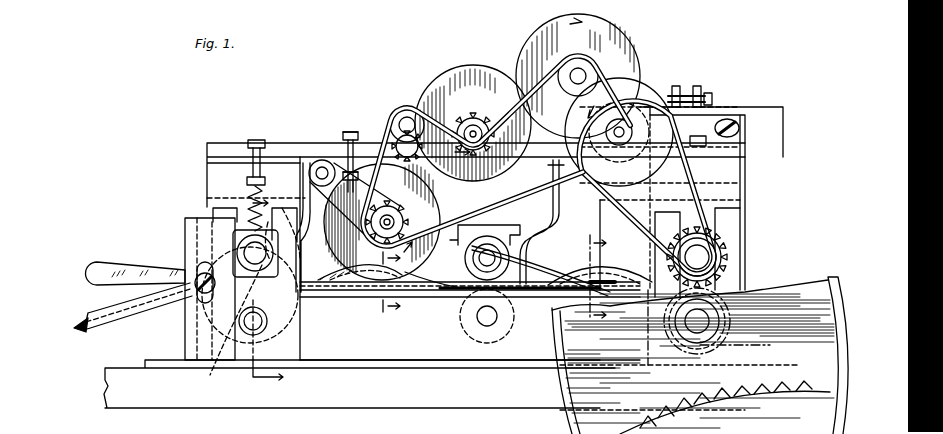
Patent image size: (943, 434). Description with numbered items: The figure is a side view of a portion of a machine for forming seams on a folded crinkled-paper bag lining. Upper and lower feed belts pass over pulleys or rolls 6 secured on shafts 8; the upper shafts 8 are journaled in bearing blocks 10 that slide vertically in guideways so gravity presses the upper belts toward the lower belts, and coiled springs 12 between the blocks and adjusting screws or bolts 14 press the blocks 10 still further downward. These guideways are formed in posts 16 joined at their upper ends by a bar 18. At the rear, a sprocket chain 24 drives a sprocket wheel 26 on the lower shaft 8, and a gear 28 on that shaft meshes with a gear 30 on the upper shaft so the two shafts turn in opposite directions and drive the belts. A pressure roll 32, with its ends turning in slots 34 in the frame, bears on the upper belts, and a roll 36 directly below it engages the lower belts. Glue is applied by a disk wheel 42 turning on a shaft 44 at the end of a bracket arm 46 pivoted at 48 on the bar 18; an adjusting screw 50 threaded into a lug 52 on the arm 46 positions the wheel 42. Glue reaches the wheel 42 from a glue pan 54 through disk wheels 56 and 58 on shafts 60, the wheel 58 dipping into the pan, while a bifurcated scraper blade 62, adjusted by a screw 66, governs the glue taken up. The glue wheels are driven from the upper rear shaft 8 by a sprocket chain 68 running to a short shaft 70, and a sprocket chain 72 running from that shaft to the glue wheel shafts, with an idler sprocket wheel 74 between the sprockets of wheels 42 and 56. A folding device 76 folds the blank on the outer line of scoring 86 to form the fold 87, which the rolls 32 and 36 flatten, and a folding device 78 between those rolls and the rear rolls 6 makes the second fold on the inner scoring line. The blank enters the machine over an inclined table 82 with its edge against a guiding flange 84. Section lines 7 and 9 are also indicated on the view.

The pulleys or rolls 6 is at (205, 382).
The section line 7 is at (274, 290).
The shafts 8 is at (248, 246).
The section line 9 is at (605, 279).
The bearing blocks 10 is at (190, 222).
The coiled springs 12 is at (250, 192).
The adjusting screws or bolts 14 is at (262, 128).
The posts 16 is at (213, 215).
The bar 18 is at (214, 143).
The sprocket chain 24 is at (835, 332).
The sprocket wheel 26 is at (803, 282).
The gear 28 is at (719, 293).
The gear 30 is at (702, 270).
The pressure roll 32 is at (432, 275).
The slots 34 is at (472, 236).
The roll 36 is at (508, 330).
The disk wheel 42 is at (372, 135).
The shaft 44 is at (394, 210).
The bracket arm 46 is at (303, 177).
The pivot 48 is at (321, 160).
The adjusting screw 50 is at (350, 132).
The lug 52 is at (351, 168).
The glue pan 54 is at (784, 141).
The disk wheel 56 is at (502, 60).
The disk wheel 58 is at (636, 52).
The shafts 60 is at (472, 124).
The scraper blade 62 is at (686, 86).
The screw 66 is at (710, 93).
The sprocket chain 68 is at (666, 100).
The short shaft 70 is at (622, 130).
The sprocket chain 72 is at (590, 68).
The idler sprocket wheel 74 is at (407, 108).
The folding device 76 is at (443, 297).
The folding device 78 is at (619, 261).
The inclined table 82 is at (115, 324).
The guiding flange 84 is at (101, 283).
The lines of scoring 86 is at (576, 278).
The fold 87 is at (462, 292).